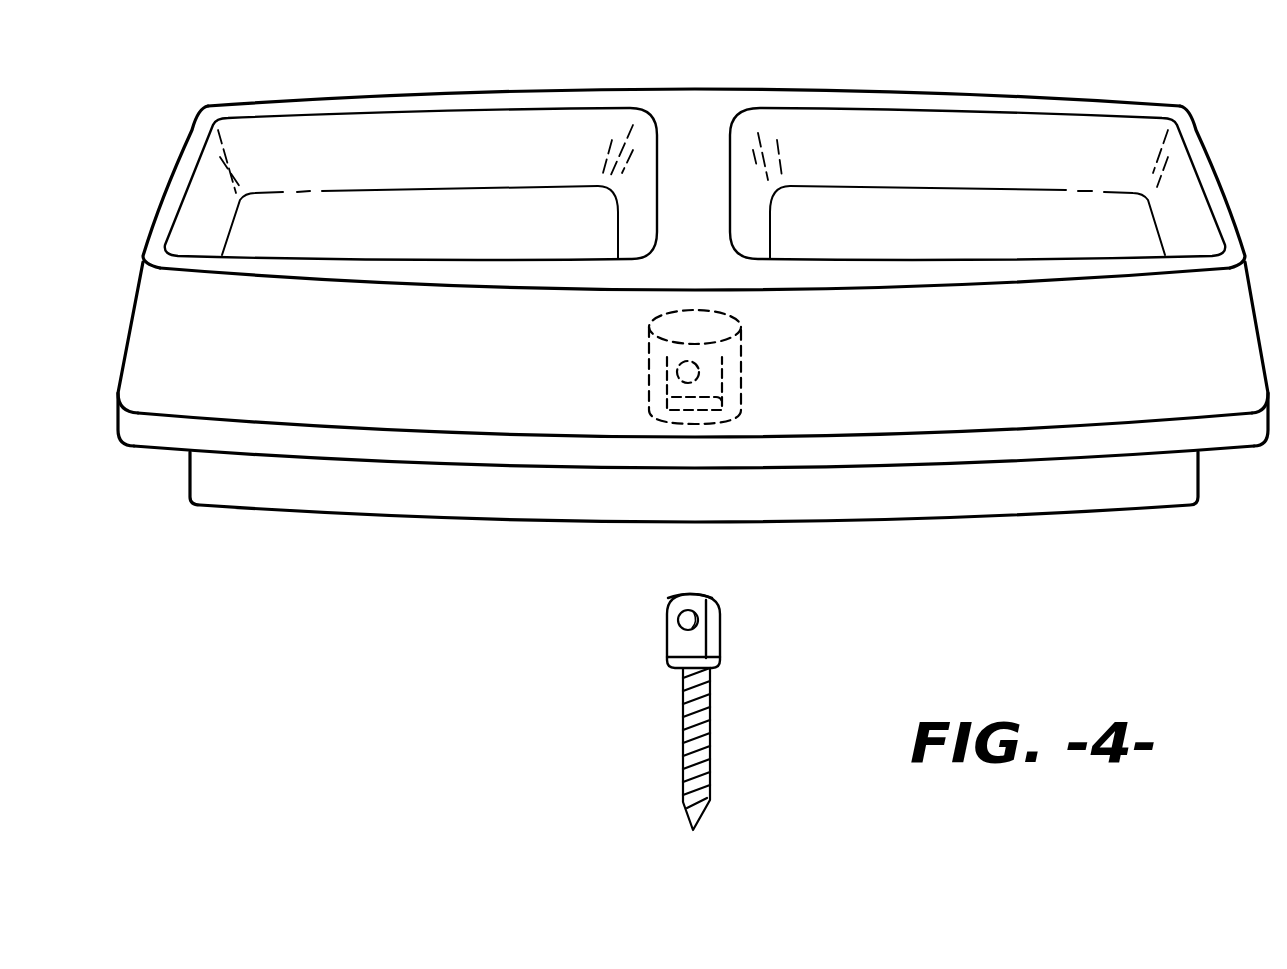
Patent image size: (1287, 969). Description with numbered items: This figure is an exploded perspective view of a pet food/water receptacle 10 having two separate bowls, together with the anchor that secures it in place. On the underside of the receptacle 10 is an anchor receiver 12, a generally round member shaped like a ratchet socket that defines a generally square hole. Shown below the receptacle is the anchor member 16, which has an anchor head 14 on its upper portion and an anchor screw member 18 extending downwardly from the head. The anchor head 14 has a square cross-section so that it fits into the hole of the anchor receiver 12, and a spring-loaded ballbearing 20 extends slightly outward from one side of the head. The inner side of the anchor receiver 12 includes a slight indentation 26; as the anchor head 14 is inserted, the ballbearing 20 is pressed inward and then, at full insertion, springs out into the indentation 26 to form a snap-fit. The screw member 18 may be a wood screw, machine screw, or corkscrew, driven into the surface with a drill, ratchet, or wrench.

The pet food/water receptacle 10 is at (690, 110).
The anchor receiver 12 is at (743, 378).
The indentation 26 is at (660, 378).
The anchor head 14 is at (722, 638).
The anchor member 16 is at (738, 728).
The anchor screw member 18 is at (672, 797).
The spring-loaded ballbearing 20 is at (680, 622).